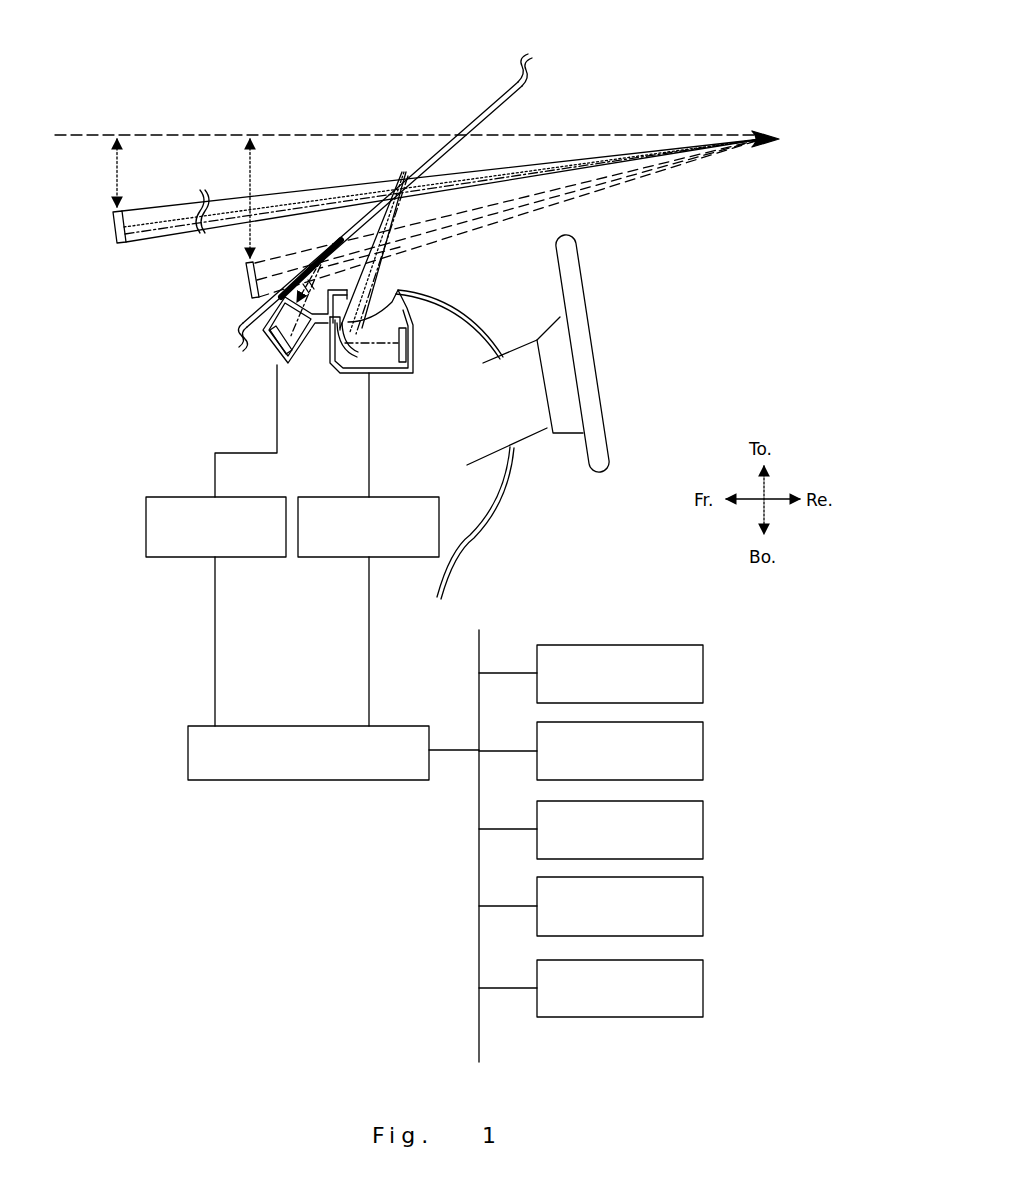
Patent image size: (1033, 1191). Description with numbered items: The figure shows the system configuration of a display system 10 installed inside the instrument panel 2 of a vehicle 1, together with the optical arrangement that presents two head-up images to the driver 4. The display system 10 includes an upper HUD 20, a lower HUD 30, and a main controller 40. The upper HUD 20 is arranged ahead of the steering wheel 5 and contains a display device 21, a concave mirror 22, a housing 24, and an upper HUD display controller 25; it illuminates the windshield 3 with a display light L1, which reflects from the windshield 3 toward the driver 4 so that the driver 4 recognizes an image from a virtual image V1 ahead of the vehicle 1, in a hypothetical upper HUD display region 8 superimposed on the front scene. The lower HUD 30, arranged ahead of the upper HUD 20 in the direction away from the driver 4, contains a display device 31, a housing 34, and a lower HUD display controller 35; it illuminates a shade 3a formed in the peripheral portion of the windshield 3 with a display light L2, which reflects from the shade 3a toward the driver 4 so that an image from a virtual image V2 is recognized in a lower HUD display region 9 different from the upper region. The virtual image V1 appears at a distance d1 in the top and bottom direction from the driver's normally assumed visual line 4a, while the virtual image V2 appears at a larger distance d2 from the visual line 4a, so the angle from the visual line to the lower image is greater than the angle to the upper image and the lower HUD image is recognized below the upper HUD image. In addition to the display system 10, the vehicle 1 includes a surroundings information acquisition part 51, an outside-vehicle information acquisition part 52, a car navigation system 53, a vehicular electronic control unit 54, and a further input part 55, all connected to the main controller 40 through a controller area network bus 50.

The vehicle 1 is at (331, 84).
The instrument panel 2 is at (468, 318).
The windshield 3 is at (497, 93).
The shade 3a is at (311, 257).
The driver 4 is at (777, 136).
The visual line 4a is at (205, 135).
The steering wheel 5 is at (580, 272).
The upper HUD display region 8 is at (113, 208).
The lower HUD display region 9 is at (243, 246).
The display system 10 is at (170, 618).
The upper HUD 20 is at (428, 398).
The display device 21 is at (393, 368).
The concave mirror 22 is at (360, 365).
The housing 24 is at (415, 370).
The upper HUD display controller 25 is at (403, 496).
The lower HUD 30 is at (268, 366).
The display device 31 is at (310, 340).
The housing 34 is at (302, 336).
The lower HUD display controller 35 is at (168, 496).
The main controller 40 is at (333, 781).
The CAN bus 50 is at (477, 890).
The surroundings information acquisition part 51 is at (705, 672).
The outside-vehicle information acquisition part 52 is at (705, 750).
The car navigation system 53 is at (705, 829).
The vehicular electronic control unit 54 is at (705, 906).
The input part 55 is at (705, 988).
The virtual image V1 is at (123, 247).
The virtual image V2 is at (247, 295).
The distance d1 is at (122, 168).
The distance d2 is at (258, 175).
The display light L1 is at (380, 256).
The display light L2 is at (455, 243).